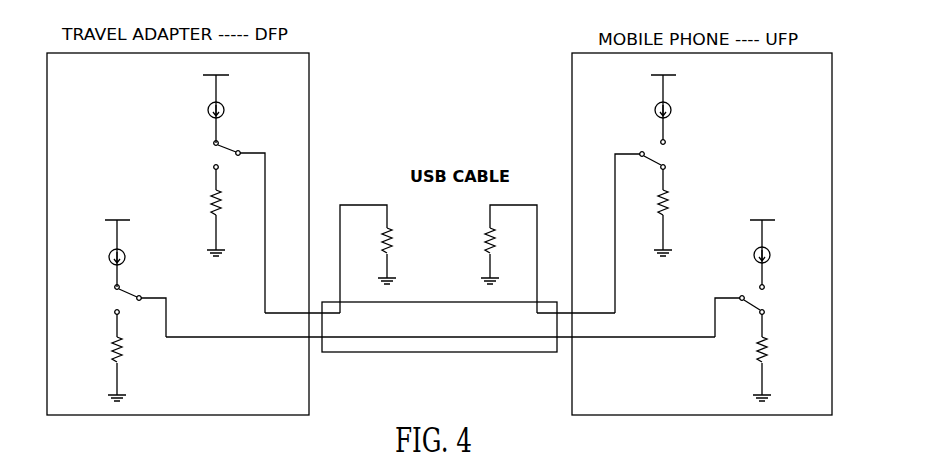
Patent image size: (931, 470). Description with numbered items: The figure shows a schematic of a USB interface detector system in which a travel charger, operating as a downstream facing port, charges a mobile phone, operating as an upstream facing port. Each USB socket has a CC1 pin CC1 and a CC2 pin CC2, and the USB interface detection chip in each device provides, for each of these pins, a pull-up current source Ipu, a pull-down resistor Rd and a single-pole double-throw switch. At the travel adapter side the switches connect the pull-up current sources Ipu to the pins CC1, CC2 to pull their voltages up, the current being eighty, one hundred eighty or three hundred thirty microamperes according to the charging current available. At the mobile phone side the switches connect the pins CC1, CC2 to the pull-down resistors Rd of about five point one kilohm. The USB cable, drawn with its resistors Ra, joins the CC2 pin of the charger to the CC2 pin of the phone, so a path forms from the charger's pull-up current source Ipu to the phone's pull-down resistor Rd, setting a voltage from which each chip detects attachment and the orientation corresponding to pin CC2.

The CC1 pin CC1 is at (440, 305).
The CC2 pin CC2 is at (440, 331).
The cable pull-down resistor Ra=1k Ra is at (438, 259).
The pull-down resistor Rd is at (440, 283).
The pull-up current source Ipu is at (439, 206).